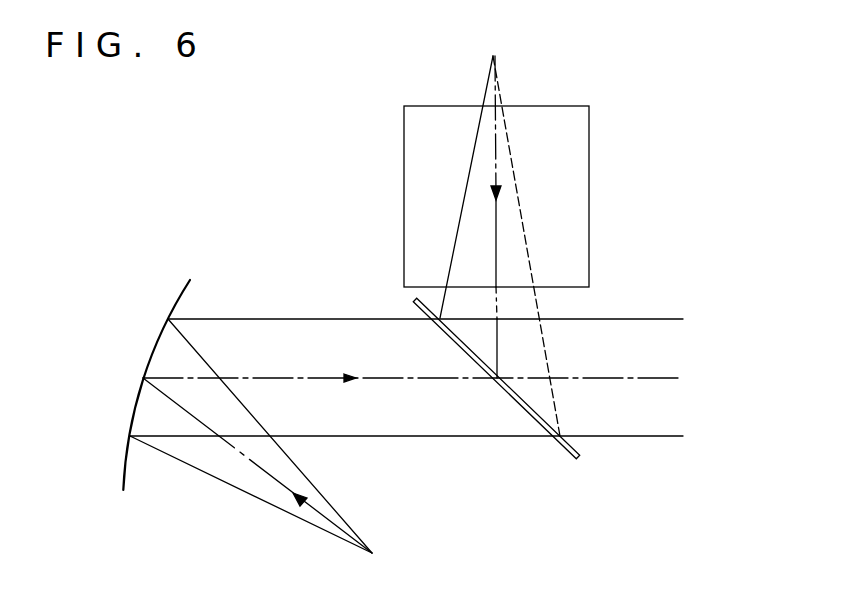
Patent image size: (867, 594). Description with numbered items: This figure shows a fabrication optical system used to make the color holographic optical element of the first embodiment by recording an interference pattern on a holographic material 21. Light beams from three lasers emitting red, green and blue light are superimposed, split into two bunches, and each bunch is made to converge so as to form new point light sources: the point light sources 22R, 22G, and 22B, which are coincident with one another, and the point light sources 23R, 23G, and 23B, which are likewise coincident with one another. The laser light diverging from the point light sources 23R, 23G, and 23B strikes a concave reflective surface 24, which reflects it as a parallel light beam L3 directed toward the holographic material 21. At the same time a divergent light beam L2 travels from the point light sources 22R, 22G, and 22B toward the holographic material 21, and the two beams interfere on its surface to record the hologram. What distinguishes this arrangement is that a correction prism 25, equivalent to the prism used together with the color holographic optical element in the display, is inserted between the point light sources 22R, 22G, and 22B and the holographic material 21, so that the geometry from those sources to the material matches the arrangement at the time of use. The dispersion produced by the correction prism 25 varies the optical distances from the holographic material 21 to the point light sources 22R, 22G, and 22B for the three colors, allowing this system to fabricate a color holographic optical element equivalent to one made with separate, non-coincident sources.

The holographic material 21 is at (567, 452).
The point light source 22R is at (575, 237).
The point light source 22G is at (575, 237).
The point light source 22B is at (493, 56).
The point light source 23R is at (361, 445).
The point light source 23G is at (361, 445).
The point light source 23B is at (374, 555).
The concave reflective surface 24 is at (174, 300).
The correction prism 25 is at (404, 197).
The divergent light beam L2 is at (530, 300).
The parallel light beam L3 is at (317, 333).